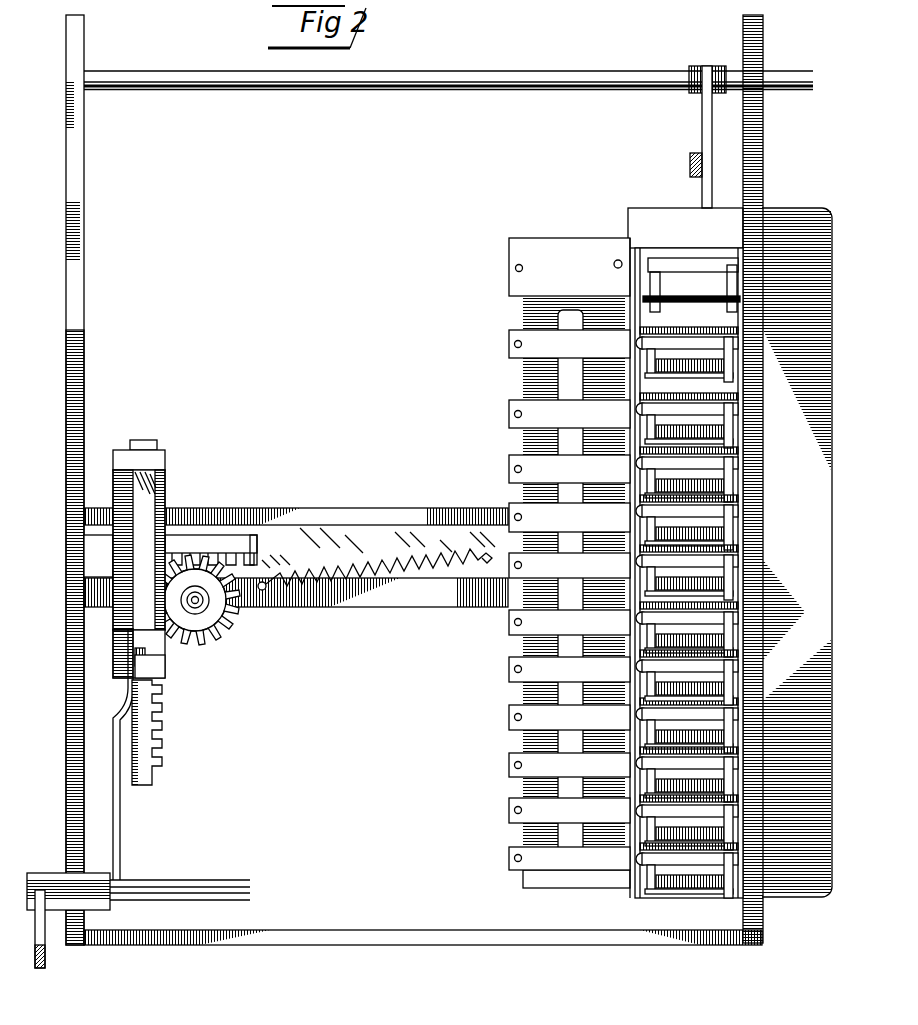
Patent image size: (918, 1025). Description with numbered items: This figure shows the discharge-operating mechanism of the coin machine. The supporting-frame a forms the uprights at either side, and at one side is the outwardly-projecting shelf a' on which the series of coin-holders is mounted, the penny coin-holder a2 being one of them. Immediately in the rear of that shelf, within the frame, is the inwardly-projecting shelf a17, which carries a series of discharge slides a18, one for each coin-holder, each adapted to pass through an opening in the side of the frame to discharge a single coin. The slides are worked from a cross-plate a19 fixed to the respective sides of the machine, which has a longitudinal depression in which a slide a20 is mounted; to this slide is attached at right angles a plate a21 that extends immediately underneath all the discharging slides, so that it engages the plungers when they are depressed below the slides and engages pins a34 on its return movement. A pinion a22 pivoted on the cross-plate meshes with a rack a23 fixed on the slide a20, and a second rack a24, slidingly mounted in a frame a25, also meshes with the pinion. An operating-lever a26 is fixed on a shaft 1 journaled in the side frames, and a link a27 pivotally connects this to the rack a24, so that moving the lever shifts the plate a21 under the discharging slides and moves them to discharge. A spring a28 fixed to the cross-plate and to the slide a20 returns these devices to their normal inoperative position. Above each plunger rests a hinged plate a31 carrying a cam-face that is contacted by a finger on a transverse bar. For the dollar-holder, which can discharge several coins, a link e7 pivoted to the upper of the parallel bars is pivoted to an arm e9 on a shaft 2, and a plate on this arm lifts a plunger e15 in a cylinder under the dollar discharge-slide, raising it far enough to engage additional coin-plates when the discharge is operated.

The shaft 1 is at (170, 888).
The shaft 2 is at (646, 73).
The supporting-frame a is at (434, 480).
The outwardly-projecting shelf a' is at (797, 552).
The coin-holder a2 is at (520, 641).
The inwardly-projecting shelf a17 is at (689, 590).
The slide a18 is at (530, 805).
The cross-plate a19 is at (418, 600).
The slide a20 is at (352, 535).
The plate a21 is at (548, 886).
The pinion a22 is at (210, 618).
The rack a23 is at (226, 545).
The rack a24 is at (156, 727).
The frame a25 is at (156, 463).
The operating-lever a26 is at (46, 958).
The link a27 is at (118, 848).
The spring a28 is at (362, 595).
The hinged plate a31 is at (742, 652).
The pin a34 is at (515, 818).
The link e7 is at (690, 156).
The arm e9 is at (703, 125).
The plunger e15 is at (617, 258).